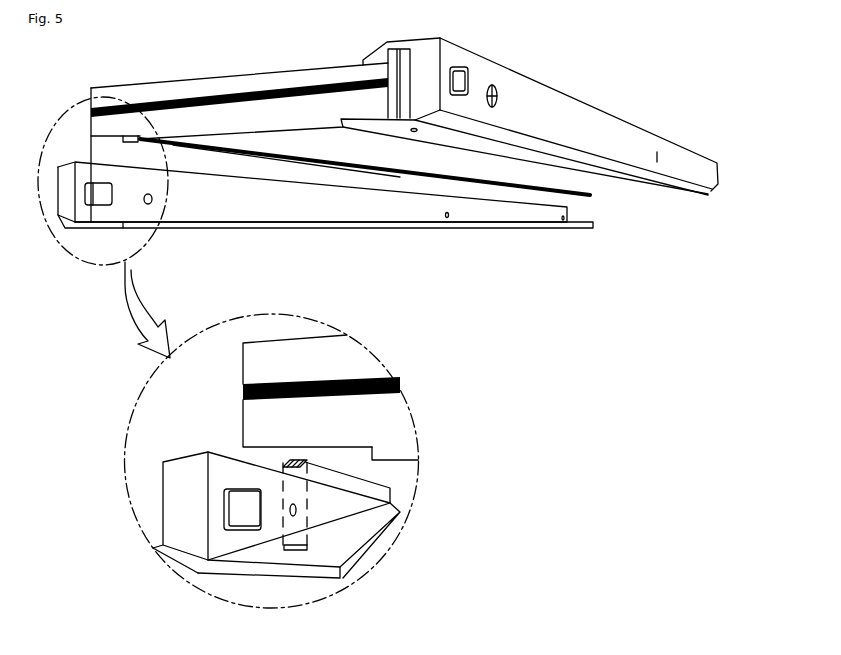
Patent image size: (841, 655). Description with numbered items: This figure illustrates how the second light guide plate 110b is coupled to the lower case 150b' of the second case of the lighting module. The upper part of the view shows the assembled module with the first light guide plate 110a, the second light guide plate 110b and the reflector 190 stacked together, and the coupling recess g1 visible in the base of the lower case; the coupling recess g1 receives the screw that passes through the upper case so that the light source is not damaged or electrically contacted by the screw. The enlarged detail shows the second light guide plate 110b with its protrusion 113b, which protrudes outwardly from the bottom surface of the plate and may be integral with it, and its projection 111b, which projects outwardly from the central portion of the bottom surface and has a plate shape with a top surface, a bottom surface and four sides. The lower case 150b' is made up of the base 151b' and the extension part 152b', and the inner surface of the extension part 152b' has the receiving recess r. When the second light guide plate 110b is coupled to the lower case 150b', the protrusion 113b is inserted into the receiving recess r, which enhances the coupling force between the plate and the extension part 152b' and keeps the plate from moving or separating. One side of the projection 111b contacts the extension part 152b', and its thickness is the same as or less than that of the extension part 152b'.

The coupling recess g1 is at (151, 203).
The first light guide plate 110a is at (362, 358).
The reflector 190 is at (402, 382).
The second light guide plate 110b is at (393, 413).
The projection 111b is at (408, 453).
The protrusion 113b is at (282, 464).
The base 151b' is at (180, 534).
The extension part 152b' is at (299, 539).
The lower case 150b' is at (261, 604).
The receiving recess r is at (297, 548).